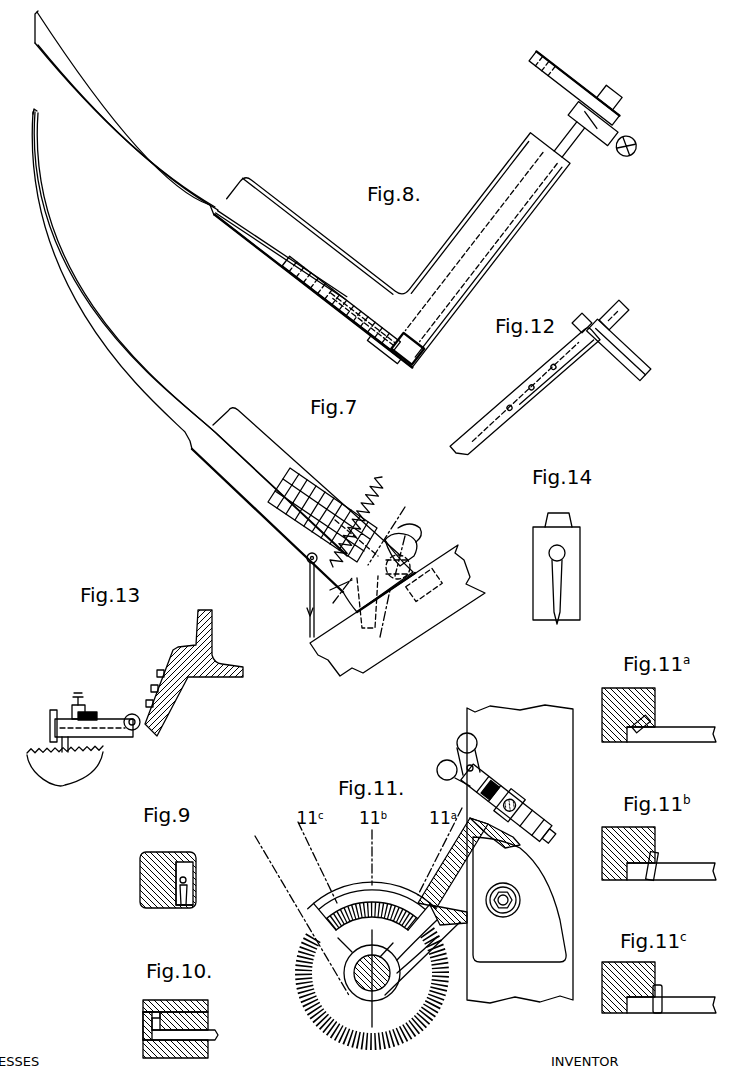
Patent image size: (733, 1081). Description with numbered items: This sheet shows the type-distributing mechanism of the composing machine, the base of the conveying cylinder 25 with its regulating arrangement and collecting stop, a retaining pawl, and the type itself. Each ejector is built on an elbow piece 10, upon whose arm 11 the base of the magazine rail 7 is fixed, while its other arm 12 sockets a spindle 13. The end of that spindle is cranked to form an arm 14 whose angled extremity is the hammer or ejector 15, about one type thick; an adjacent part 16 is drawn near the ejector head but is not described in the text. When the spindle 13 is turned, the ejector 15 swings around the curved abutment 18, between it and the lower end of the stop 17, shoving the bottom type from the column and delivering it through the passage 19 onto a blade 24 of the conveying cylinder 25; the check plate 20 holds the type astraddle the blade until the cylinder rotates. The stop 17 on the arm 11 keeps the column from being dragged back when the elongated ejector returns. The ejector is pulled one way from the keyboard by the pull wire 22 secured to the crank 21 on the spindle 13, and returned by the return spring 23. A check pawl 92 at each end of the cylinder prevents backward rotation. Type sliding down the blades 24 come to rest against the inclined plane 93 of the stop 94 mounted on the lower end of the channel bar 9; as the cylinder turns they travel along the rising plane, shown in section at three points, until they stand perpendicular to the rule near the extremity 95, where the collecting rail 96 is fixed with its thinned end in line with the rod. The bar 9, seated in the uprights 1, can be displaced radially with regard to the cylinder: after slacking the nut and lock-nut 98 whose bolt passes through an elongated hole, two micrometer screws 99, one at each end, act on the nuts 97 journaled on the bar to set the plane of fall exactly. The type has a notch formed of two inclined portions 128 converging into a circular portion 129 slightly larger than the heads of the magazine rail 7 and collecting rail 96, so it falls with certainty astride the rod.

In FIG. 11, the upright 1 is at (520, 854).
In FIG. 8, the magazine rail 7 is at (103, 100).
In FIG. 7, the magazine rail 7 is at (137, 378).
In FIG. 9, the magazine rail 7 is at (188, 893).
In FIG. 11, the channel shaped bar 9 is at (474, 847).
In FIG. 8, the elbow piece 10 is at (392, 188).
In FIG. 8, the arm 11 is at (281, 213).
In FIG. 7, the arm 11 is at (250, 434).
In FIG. 8, the arm 12 is at (511, 187).
In FIG. 8, the spindle 13 is at (571, 152).
In FIG. 7, the spindle 13 is at (398, 588).
In FIG. 10, the spindle 13 is at (214, 1038).
In FIG. 7, the arm 14 is at (406, 576).
In FIG. 10, the arm 14 is at (145, 1043).
In FIG. 8, the hammer or ejector 15 is at (397, 362).
In FIG. 7, the hammer or ejector 15 is at (413, 549).
In FIG. 10, the hammer or ejector 15 is at (150, 1011).
In FIG. 7, the wall 16 is at (408, 526).
In FIG. 10, the wall 16 is at (143, 1016).
In FIG. 8, the stop 17 is at (372, 312).
In FIG. 7, the stop 17 is at (378, 522).
In FIG. 9, the stop 17 is at (191, 853).
In FIG. 10, the stop 17 is at (160, 1000).
In FIG. 7, the curved abutment 18 is at (420, 568).
In FIG. 10, the curved abutment 18 is at (143, 1027).
In FIG. 7, the passage 19 is at (362, 615).
In FIG. 8, the check plate 20 is at (376, 349).
In FIG. 7, the check plate 20 is at (348, 580).
In FIG. 9, the check plate 20 is at (195, 880).
In FIG. 8, the crank 21 is at (552, 86).
In FIG. 7, the crank 21 is at (306, 558).
In FIG. 7, the pull wire 22 is at (311, 625).
In FIG. 7, the return spring 23 is at (383, 476).
In FIG. 7, the blade 24 is at (448, 610).
In FIG. 12, the blade 24 is at (615, 306).
In FIG. 11A, the blade 24 is at (676, 743).
In FIG. 11B, the blade 24 is at (676, 881).
In FIG. 11C, the blade 24 is at (676, 1014).
In FIG. 11, the conveying cylinder 25 is at (382, 981).
In FIG. 13, the check pawl 92 is at (115, 730).
In FIG. 12, the inclined plane 93 is at (624, 341).
In FIG. 11A, the inclined plane 93 is at (656, 716).
In FIG. 11B, the inclined plane 93 is at (660, 853).
In FIG. 11, the inclined plane 93 is at (390, 893).
In FIG. 12, the stop 94 is at (579, 315).
In FIG. 11A, the stop 94 is at (656, 693).
In FIG. 11B, the stop 94 is at (657, 834).
In FIG. 11, the stop 94 is at (360, 900).
In FIG. 11C, the extremity 95 is at (657, 975).
In FIG. 11, the extremity 95 is at (322, 910).
In FIG. 12, the collecting rail 96 is at (525, 393).
In FIG. 11, the nut 97 is at (531, 791).
In FIG. 11, the nut and lock-nut 98 is at (515, 914).
In FIG. 11, the micrometer screw 99 is at (493, 777).
In FIG. 14, the inclined portions 128 is at (552, 587).
In FIG. 14, the circular portion 129 is at (563, 548).